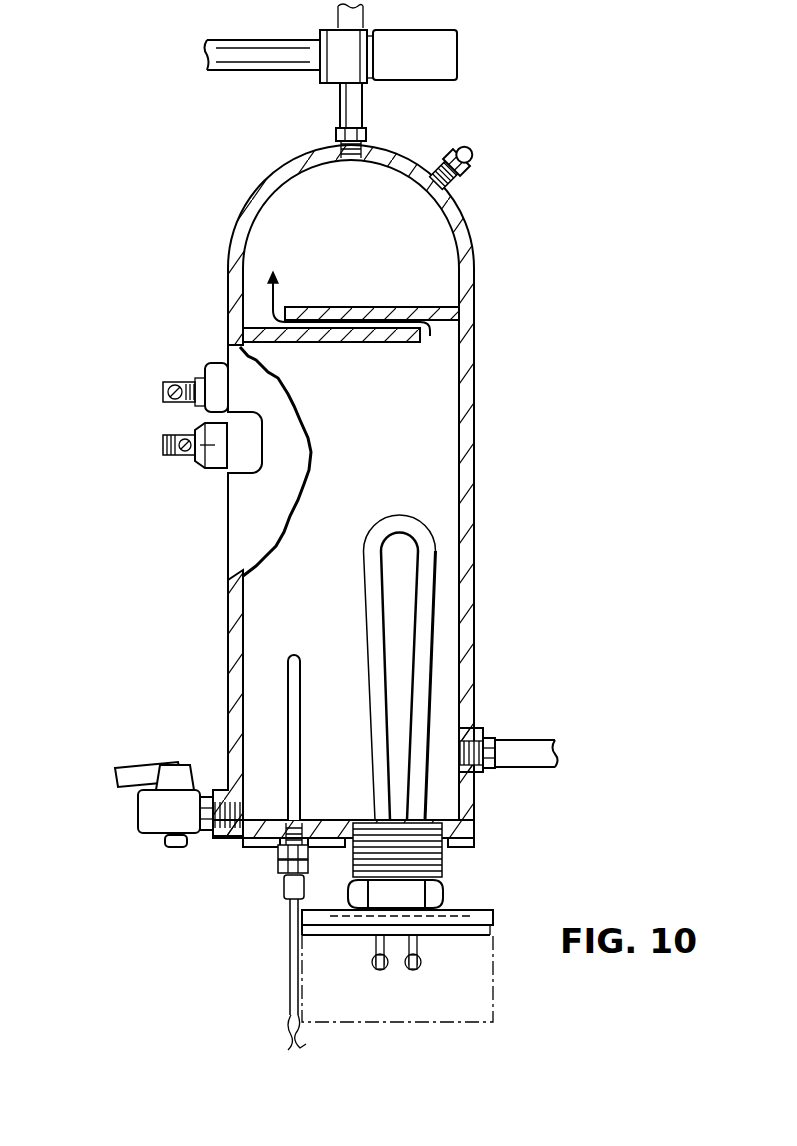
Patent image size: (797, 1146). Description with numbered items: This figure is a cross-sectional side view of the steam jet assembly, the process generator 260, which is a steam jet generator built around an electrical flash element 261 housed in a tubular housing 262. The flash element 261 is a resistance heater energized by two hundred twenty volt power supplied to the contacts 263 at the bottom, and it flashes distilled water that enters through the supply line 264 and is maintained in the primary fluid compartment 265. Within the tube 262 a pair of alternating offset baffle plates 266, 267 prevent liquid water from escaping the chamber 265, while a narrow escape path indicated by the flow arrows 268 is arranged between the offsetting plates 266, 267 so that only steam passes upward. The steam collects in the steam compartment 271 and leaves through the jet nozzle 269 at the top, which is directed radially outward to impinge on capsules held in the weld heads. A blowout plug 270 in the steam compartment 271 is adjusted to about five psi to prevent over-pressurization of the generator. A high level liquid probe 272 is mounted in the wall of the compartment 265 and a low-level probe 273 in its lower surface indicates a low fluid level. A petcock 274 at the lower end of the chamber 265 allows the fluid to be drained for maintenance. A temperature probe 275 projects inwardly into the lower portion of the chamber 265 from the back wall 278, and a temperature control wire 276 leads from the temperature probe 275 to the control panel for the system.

The process generator 260 is at (418, 496).
The electrical flash element 261 is at (384, 524).
The tubular housing 262 is at (383, 496).
The contacts 263 is at (420, 950).
The supply line 264 is at (527, 748).
The primary fluid compartment 265 is at (373, 466).
The baffle plate 266 is at (373, 340).
The baffle plate 267 is at (393, 312).
The flow arrows 268 is at (278, 300).
The jet nozzle 269 is at (357, 110).
The blowout plug 270 is at (465, 161).
The steam compartment 271 is at (359, 238).
The high level liquid probe 272 is at (162, 386).
The low-level probe 273 is at (216, 470).
The petcock 274 is at (155, 820).
The temperature probe 275 is at (293, 655).
The temperature control wire 276 is at (289, 939).
The back wall 278 is at (323, 820).